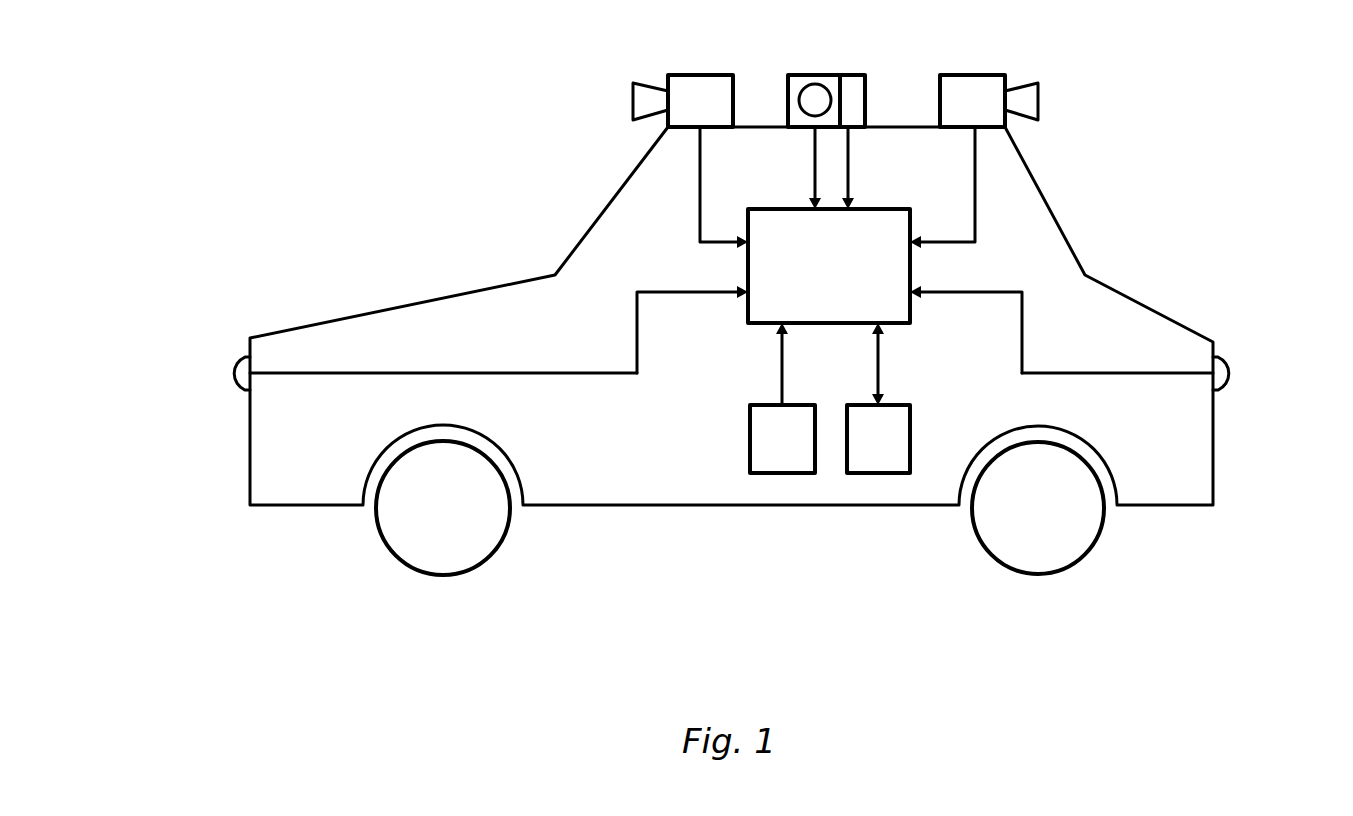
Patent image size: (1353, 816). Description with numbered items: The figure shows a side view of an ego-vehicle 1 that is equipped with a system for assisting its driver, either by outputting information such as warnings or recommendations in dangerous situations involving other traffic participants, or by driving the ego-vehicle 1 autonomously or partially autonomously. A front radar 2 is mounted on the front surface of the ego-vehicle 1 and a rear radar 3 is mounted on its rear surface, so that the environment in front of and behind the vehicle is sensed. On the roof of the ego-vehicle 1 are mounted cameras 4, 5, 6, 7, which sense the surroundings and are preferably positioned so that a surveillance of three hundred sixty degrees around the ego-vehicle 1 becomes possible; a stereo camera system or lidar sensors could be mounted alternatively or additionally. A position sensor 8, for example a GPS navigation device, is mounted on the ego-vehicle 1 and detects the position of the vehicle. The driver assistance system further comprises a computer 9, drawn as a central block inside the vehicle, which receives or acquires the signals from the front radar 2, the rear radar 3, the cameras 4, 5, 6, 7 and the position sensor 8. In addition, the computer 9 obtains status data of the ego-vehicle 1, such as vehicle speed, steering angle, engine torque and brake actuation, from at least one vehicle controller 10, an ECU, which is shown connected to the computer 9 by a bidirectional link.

The ego-vehicle 1 is at (1063, 228).
The front radar 2 is at (232, 375).
The rear radar 3 is at (1235, 368).
The camera 4 is at (667, 75).
The camera 5 is at (798, 75).
The camera 6 is at (865, 80).
The camera 7 is at (1005, 75).
The position sensor 8 is at (750, 445).
The computer 9 is at (881, 209).
The vehicle controller 10 is at (910, 437).